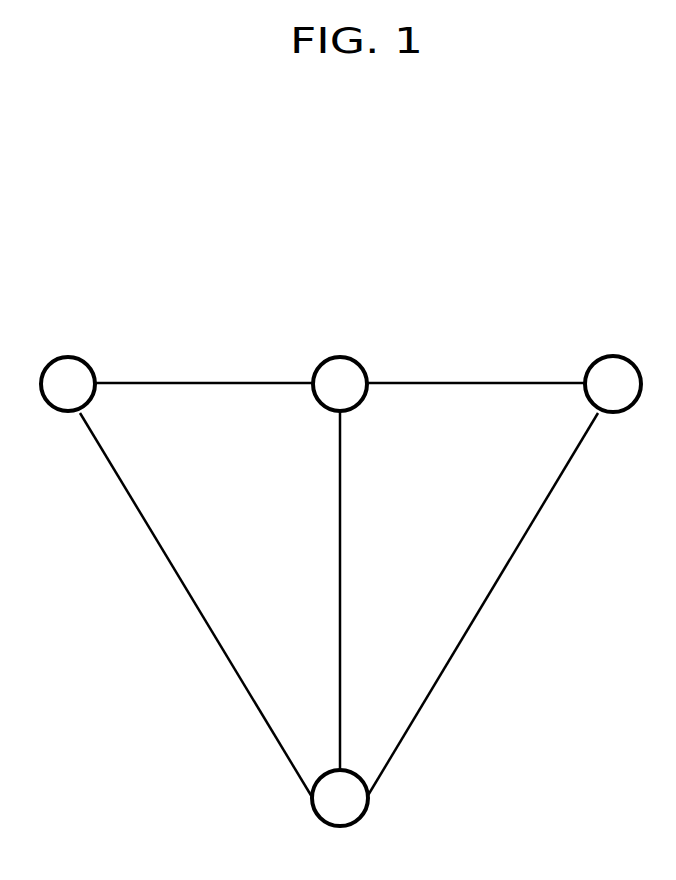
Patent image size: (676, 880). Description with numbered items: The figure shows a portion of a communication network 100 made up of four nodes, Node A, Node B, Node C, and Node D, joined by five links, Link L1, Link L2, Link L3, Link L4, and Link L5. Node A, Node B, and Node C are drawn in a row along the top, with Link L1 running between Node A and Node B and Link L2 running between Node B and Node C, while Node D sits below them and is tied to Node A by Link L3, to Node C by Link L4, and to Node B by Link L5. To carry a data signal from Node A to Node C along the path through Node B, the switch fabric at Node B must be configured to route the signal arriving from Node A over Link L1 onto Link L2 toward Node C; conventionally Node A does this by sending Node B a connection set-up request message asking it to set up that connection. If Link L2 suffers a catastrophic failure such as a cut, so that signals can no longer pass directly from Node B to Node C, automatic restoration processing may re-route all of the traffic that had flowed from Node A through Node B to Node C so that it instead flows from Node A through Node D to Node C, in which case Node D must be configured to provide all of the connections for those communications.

The communication network 100 is at (631, 120).
The Node A is at (68, 364).
The Node B is at (340, 363).
The Node C is at (613, 363).
The Node D is at (340, 817).
The Link L1 is at (204, 360).
The Link L2 is at (476, 360).
The Link L3 is at (196, 605).
The Link L4 is at (482, 605).
The Link L5 is at (363, 590).